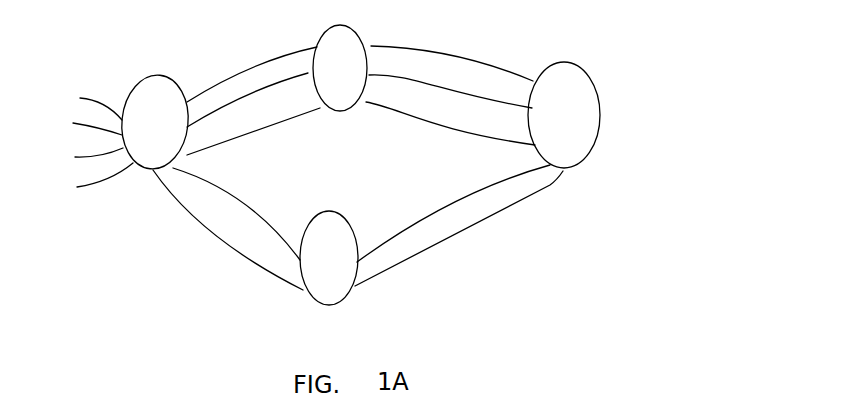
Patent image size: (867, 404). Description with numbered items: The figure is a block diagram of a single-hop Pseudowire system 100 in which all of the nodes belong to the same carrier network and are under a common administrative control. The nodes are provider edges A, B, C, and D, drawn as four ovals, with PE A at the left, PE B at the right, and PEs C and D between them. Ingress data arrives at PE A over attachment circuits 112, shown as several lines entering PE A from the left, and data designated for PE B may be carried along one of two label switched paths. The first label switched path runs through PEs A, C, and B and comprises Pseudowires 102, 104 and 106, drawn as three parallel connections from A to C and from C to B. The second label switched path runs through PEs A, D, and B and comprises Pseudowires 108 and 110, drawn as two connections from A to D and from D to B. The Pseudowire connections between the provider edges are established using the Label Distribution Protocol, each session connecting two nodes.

The system 100 is at (710, 71).
The Pseudowire 102 is at (225, 73).
The Pseudowire 104 is at (220, 106).
The Pseudowire 106 is at (220, 149).
The Pseudowire 108 is at (248, 207).
The Pseudowire 110 is at (201, 235).
The attachment circuits 112 is at (89, 98).